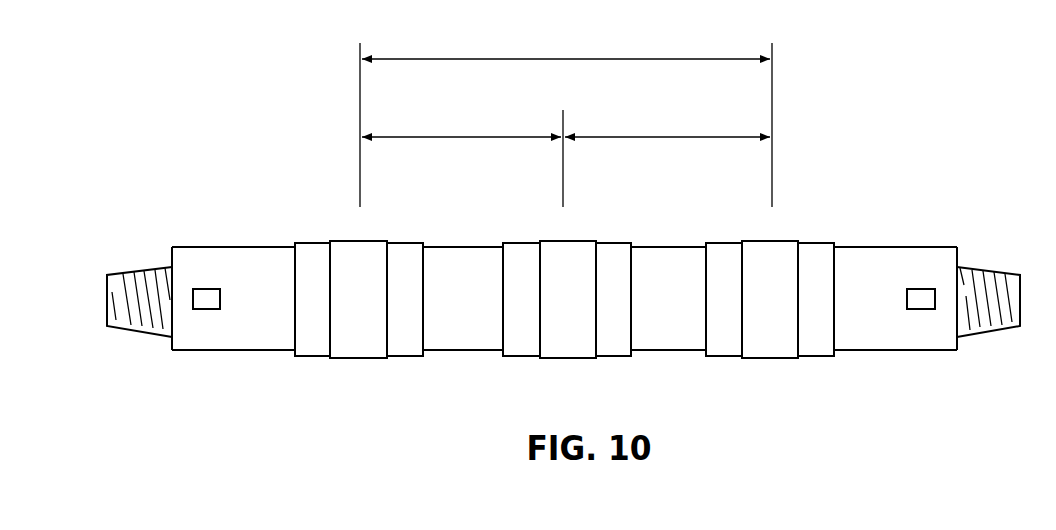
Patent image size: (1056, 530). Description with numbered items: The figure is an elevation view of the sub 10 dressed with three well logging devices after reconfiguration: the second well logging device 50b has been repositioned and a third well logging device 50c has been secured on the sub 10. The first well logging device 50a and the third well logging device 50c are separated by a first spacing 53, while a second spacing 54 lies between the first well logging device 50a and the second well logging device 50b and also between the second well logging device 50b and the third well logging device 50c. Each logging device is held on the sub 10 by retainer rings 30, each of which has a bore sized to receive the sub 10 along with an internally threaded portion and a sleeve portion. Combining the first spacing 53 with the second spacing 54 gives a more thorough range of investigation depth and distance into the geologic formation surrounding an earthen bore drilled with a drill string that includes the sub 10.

The sub 10 is at (668, 246).
The retainer ring 30 is at (308, 356).
The first well logging device 50a is at (360, 241).
The second well logging device 50b is at (580, 240).
The third well logging device 50c is at (783, 240).
The first spacing 53 is at (563, 59).
The second spacing 54 is at (435, 137).